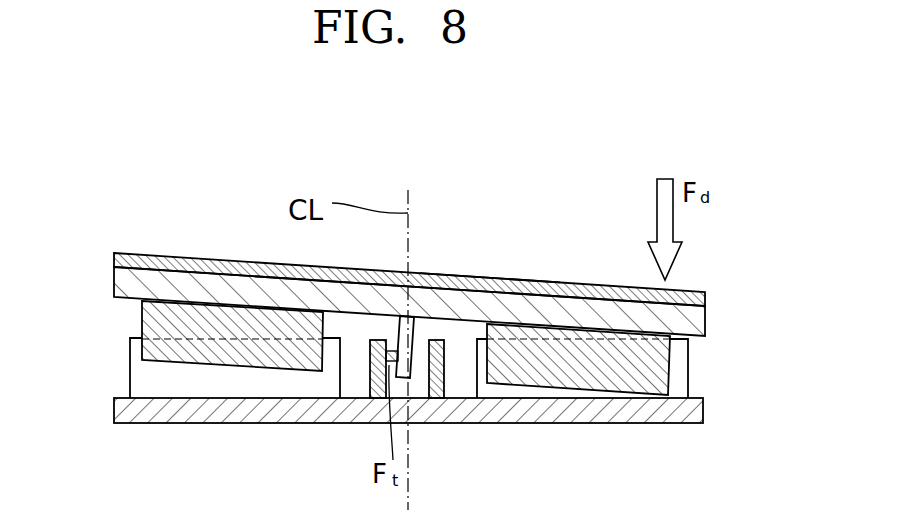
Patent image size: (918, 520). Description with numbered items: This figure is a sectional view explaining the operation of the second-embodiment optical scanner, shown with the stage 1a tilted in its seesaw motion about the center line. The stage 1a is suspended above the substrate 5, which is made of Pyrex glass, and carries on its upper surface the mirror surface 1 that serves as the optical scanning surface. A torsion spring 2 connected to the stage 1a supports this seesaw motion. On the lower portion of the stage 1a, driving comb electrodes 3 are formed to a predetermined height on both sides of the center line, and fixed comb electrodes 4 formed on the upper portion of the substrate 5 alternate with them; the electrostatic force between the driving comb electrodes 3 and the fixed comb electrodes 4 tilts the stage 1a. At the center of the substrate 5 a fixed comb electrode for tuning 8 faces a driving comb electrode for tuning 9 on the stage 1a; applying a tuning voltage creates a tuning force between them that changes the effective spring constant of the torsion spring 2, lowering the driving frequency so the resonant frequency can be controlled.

The mirror surface 1 is at (692, 301).
The stage 1a is at (688, 318).
The torsion spring 2 is at (404, 318).
The driving comb electrodes 3 is at (145, 300).
The fixed comb electrodes 4 is at (130, 360).
The substrate 5 is at (697, 418).
The fixed comb electrode for tuning 8 is at (373, 388).
The driving comb electrode for tuning 9 is at (483, 279).